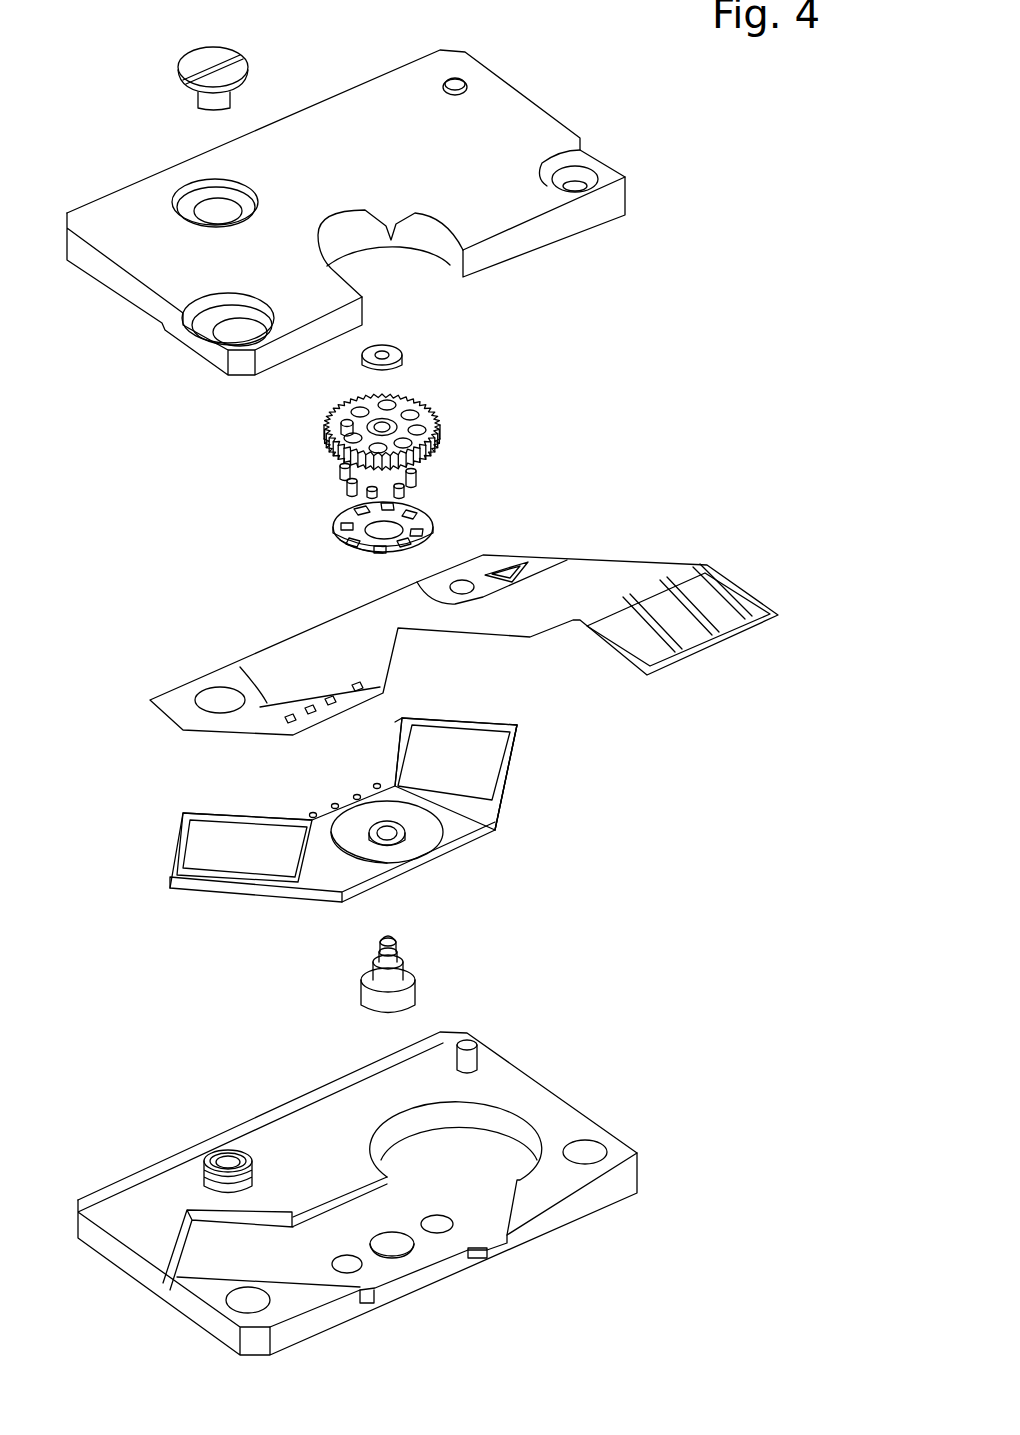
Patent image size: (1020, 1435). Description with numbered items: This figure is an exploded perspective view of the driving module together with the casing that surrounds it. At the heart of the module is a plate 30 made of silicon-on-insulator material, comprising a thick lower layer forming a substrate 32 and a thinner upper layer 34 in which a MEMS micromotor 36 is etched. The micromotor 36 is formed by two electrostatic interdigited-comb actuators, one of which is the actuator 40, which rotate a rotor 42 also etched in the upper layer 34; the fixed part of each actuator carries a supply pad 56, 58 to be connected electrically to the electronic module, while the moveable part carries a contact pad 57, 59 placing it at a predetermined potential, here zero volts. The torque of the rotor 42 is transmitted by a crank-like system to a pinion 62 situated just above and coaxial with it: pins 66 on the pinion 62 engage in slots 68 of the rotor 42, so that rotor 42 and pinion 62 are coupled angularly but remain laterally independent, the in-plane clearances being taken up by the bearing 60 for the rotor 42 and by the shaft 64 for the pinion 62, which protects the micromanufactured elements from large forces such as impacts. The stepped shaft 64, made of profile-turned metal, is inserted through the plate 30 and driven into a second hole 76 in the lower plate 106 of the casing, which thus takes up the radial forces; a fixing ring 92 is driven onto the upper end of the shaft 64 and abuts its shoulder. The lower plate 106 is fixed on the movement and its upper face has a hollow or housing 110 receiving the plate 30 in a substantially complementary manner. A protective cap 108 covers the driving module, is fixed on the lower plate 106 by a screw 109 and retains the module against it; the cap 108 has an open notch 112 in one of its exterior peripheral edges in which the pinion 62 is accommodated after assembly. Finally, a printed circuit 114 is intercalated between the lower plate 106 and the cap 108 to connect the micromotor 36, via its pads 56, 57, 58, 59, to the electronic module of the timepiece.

The screw 109 is at (190, 63).
The protective cap 108 is at (399, 500).
The open notch 112 is at (449, 253).
The fixing ring 92 is at (408, 351).
The pinion 62 is at (452, 433).
The pins 66 is at (345, 495).
The rotor 42 is at (438, 510).
The slots 68 is at (367, 554).
The printed circuit 114 is at (660, 556).
The upper layer 34 is at (505, 717).
The micromotor 36 is at (238, 796).
The supply pad 56 is at (308, 815).
The contact pad 57 is at (331, 806).
The supply pad 58 is at (376, 784).
The contact pad 59 is at (353, 797).
The actuator 40 is at (497, 750).
The substrate 32 is at (515, 775).
The plate 30 is at (373, 793).
The bearing 60 is at (412, 838).
The shaft 64 is at (420, 986).
The housing 110 is at (520, 1115).
The lower plate 106 is at (376, 1193).
The second hole 76 is at (395, 1250).